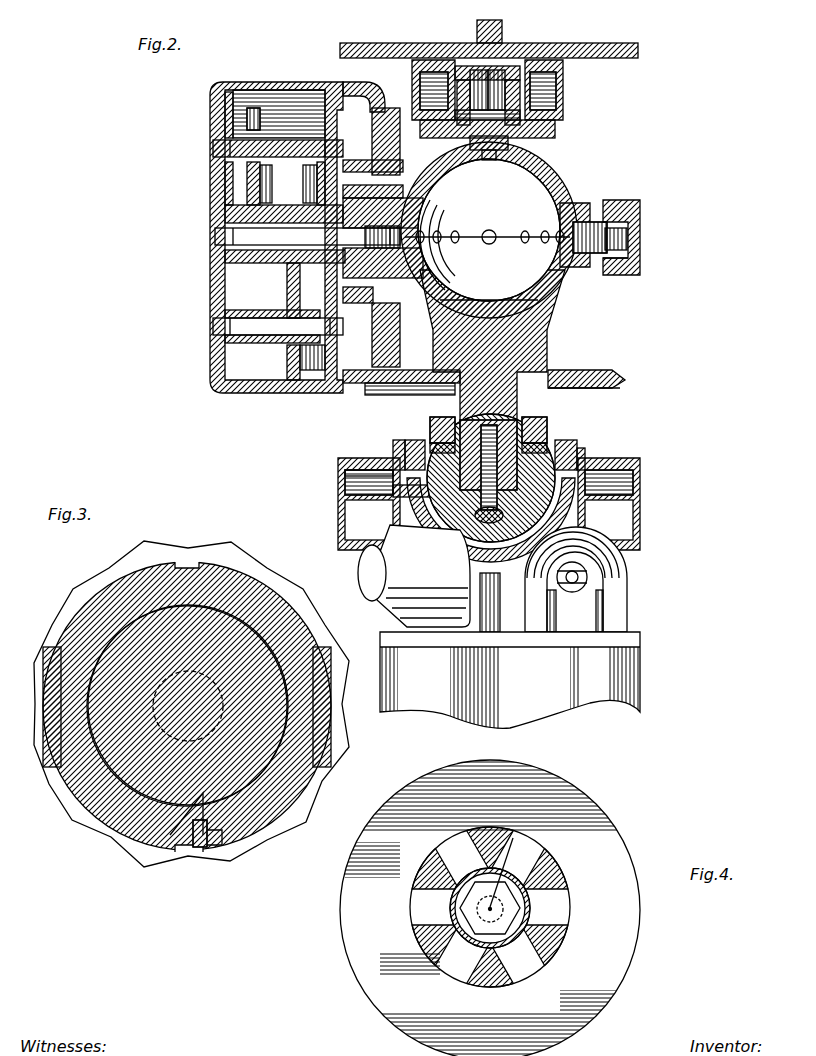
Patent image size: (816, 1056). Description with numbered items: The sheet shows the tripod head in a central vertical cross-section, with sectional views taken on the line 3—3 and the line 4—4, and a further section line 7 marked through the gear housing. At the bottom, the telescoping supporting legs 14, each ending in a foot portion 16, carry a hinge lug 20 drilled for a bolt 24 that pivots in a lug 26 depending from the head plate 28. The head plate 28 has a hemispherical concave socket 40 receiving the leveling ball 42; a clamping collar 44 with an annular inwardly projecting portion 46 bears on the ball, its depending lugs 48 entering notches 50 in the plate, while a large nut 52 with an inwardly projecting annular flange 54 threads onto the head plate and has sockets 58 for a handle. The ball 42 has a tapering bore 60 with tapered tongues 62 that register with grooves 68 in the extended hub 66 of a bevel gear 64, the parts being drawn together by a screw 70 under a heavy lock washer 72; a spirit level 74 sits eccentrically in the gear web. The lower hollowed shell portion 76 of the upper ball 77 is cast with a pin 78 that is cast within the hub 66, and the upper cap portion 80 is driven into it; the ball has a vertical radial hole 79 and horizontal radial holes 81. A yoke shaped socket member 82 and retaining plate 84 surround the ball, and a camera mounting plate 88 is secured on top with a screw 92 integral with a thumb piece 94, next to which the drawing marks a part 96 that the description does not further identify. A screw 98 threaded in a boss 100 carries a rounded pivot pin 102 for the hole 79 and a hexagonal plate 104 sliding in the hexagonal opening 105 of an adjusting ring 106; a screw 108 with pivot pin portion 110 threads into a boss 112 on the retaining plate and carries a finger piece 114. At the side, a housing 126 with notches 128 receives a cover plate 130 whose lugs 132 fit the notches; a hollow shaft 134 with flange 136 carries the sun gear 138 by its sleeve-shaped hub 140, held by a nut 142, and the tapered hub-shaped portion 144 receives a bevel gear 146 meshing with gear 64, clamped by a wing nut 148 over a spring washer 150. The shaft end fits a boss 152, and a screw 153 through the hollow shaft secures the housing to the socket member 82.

In FIG. 2, the telescoping supporting legs 14 is at (630, 680).
In FIG. 2, the foot portion 16 is at (553, 234).
In FIG. 2, the hinge lug 20 is at (620, 605).
In FIG. 2, the bolt 24 is at (580, 588).
In FIG. 2, the lug 26 is at (414, 576).
In FIG. 2, the head plate 28 is at (615, 548).
In FIG. 2, the concave socket 40 is at (600, 500).
In FIG. 2, the leveling ball 42 is at (545, 440).
In FIG. 3, the leveling ball 42 is at (162, 845).
In FIG. 2, the clamping collar 44 is at (570, 460).
In FIG. 2, the annular inwardly projecting portion 46 is at (525, 445).
In FIG. 2, the depending lugs 48 is at (600, 458).
In FIG. 2, the notches 50 is at (355, 492).
In FIG. 2, the large nut 52 is at (393, 452).
In FIG. 2, the inwardly projecting annular flange 54 is at (407, 455).
In FIG. 2, the sockets 58 is at (357, 468).
In FIG. 2, the tapering bore 60 is at (443, 415).
In FIG. 3, the tapering bore 60 is at (170, 835).
In FIG. 3, the tapered tongues 62 is at (200, 847).
In FIG. 2, the bevel gear 64 is at (615, 390).
In FIG. 2, the extended hub 66 is at (452, 430).
In FIG. 3, the extended hub 66 is at (248, 802).
In FIG. 3, the grooves 68 is at (222, 838).
In FIG. 2, the screw 70 is at (455, 535).
In FIG. 2, the heavy lock washer 72 is at (432, 488).
In FIG. 2, the spirit level 74 is at (612, 370).
In FIG. 2, the lower hollowed shell portion 76 is at (590, 268).
In FIG. 2, the upper ball 77 is at (530, 205).
In FIG. 2, the pin 78 is at (527, 355).
In FIG. 2, the vertical radial hole 79 is at (487, 160).
In FIG. 2, the upper cap portion 80 is at (545, 172).
In FIG. 2, the radial holes 81 is at (480, 244).
In FIG. 2, the yoke shaped socket member 82 is at (426, 170).
In FIG. 2, the retaining plate 84 is at (560, 190).
In FIG. 2, the camera mounting plate 88 is at (575, 43).
In FIG. 4, the camera mounting plate 88 is at (615, 970).
In FIG. 2, the screw 92 is at (502, 35).
In FIG. 4, the screw 92 is at (460, 935).
In FIG. 2, the thumb piece 94 is at (563, 66).
In FIG. 4, the thumb piece 94 is at (520, 915).
In FIG. 2, the bearing 96 is at (425, 96).
In FIG. 4, the bearing 96 is at (560, 920).
In FIG. 2, the screw 98 is at (505, 150).
In FIG. 2, the boss 100 is at (522, 102).
In FIG. 2, the rounded pivot pin 102 is at (492, 150).
In FIG. 2, the hexagonal plate 104 is at (520, 90).
In FIG. 2, the opening 105 is at (447, 98).
In FIG. 4, the opening 105 is at (507, 872).
In FIG. 2, the adjusting ring 106 is at (555, 128).
In FIG. 4, the adjusting ring 106 is at (430, 915).
In FIG. 2, the screw 108 is at (628, 240).
In FIG. 2, the pivot pin portion 110 is at (578, 242).
In FIG. 2, the boss 112 is at (612, 200).
In FIG. 2, the finger piece 114 is at (640, 276).
In FIG. 2, the housing 126 is at (265, 393).
In FIG. 2, the notches 128 is at (236, 84).
In FIG. 2, the cover plate 130 is at (290, 273).
In FIG. 2, the lugs or projections 132 is at (212, 85).
In FIG. 2, the hollow shaft 134 is at (222, 270).
In FIG. 2, the flange 136 is at (225, 290).
In FIG. 2, the sun gear 138 is at (310, 170).
In FIG. 2, the sleeve-shaped hub 140 is at (215, 248).
In FIG. 2, the nut 142 is at (302, 270).
In FIG. 2, the tapered hub-shaped portion 144 is at (352, 383).
In FIG. 2, the bevel gear 146 is at (350, 105).
In FIG. 2, the wing nut 148 is at (398, 345).
In FIG. 2, the spring washer 150 is at (380, 112).
In FIG. 2, the boss 152 is at (450, 245).
In FIG. 2, the screw 153 is at (233, 233).
In FIG. 2, the section line 3 is at (436, 402).
In FIG. 2, the section line 4 is at (404, 87).
In FIG. 2, the section line 7 is at (228, 76).